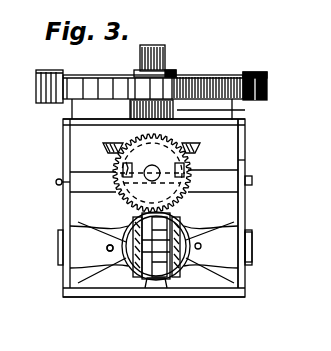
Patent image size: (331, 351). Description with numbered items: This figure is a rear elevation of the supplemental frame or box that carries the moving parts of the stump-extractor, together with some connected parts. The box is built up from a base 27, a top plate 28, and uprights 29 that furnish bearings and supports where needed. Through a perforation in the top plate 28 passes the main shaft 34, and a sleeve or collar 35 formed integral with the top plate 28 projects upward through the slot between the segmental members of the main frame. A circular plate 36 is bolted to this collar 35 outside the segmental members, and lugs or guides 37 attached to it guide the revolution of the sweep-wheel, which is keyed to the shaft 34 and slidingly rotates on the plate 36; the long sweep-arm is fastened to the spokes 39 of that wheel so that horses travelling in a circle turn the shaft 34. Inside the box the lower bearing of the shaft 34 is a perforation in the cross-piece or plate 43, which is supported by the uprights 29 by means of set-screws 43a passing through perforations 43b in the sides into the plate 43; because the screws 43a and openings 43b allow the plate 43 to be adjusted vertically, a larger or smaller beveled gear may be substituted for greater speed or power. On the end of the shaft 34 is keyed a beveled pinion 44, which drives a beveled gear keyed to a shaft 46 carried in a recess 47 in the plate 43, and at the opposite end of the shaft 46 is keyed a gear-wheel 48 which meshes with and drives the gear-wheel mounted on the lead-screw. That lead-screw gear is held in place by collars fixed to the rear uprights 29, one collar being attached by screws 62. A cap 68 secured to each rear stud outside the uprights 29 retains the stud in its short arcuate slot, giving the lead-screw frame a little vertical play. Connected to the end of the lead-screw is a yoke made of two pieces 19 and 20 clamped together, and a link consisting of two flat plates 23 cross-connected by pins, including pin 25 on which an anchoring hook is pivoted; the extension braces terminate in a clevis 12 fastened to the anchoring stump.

The swiveled clevis 12 is at (107, 249).
The yoke piece 19 is at (143, 288).
The yoke piece 20 is at (161, 291).
The flat plate 23 is at (165, 217).
The pin 25 is at (180, 231).
The base 27 is at (237, 291).
The top plate 28 is at (63, 125).
The uprights 29 is at (245, 138).
The main shaft 34 is at (164, 46).
The sleeve or collar 35 is at (245, 110).
The circular plate 36 is at (267, 85).
The lugs or guides 37 is at (266, 72).
The spokes 39 is at (212, 77).
The cross-piece or plate 43 is at (180, 178).
The set-screws 43a is at (252, 180).
The perforations 43b is at (243, 164).
The beveled pinion 44 is at (103, 148).
The shaft 46 is at (150, 176).
The recess 47 is at (185, 167).
The gear-wheel 48 is at (56, 182).
The screws 62 is at (110, 251).
The cap 68 is at (250, 238).